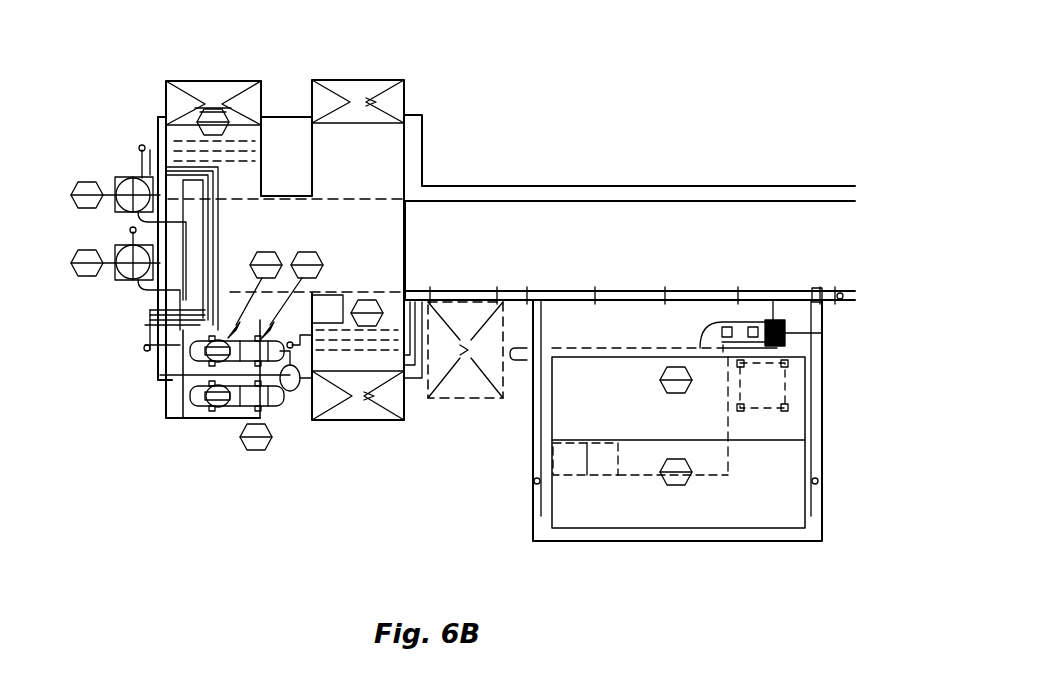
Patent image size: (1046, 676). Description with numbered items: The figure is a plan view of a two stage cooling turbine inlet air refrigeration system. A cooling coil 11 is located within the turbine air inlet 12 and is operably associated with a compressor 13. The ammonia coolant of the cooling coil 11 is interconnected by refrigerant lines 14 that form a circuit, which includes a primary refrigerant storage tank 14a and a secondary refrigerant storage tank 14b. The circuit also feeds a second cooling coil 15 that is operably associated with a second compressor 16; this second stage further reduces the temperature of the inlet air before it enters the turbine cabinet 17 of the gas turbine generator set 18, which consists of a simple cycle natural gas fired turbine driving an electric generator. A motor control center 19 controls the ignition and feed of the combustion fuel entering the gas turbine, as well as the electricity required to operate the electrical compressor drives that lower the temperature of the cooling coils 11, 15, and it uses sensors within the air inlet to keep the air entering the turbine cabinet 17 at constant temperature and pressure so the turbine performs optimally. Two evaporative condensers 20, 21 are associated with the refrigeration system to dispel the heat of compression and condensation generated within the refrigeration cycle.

The cooling coil 11 is at (216, 109).
The turbine air inlet 12 is at (208, 49).
The compressor 13 is at (268, 251).
The refrigerant lines 14 is at (213, 232).
The primary refrigerant storage tank 14a is at (72, 186).
The secondary refrigerant storage tank 14b is at (76, 278).
The second cooling coil 15 is at (312, 251).
The second compressor 16 is at (270, 445).
The turbine cabinet 17 is at (350, 62).
The gas turbine generator set 18 is at (620, 213).
The motor control center 19 is at (570, 476).
The evaporative condenser 20 is at (670, 366).
The evaporative condenser 21 is at (690, 485).